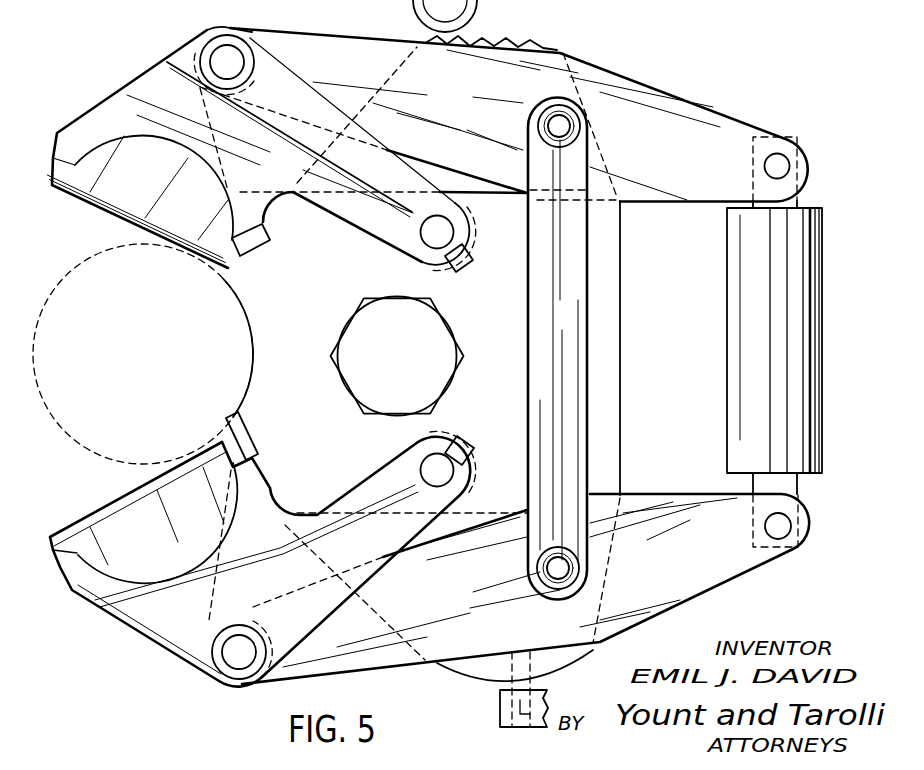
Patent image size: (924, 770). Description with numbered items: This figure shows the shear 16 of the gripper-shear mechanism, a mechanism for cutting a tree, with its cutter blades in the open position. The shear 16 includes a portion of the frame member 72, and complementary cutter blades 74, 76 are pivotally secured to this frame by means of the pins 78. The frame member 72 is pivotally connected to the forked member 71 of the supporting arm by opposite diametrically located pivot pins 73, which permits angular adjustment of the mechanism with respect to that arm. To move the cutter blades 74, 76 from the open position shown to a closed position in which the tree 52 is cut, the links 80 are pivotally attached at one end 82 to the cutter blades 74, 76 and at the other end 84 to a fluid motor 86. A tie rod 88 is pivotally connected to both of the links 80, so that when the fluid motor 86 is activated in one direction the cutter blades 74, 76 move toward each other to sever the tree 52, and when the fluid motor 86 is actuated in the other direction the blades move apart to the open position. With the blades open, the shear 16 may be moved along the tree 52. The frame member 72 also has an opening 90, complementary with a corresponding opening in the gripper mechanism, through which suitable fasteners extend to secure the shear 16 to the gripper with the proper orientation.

The shear 16 is at (748, 81).
The tree 52 is at (68, 273).
The forked member 71 is at (500, 708).
The frame member 72 is at (612, 330).
The pivot pins 73 is at (500, 722).
The cutter blade 74 is at (104, 117).
The cutter blade 76 is at (133, 608).
The pins 78 is at (425, 243).
The links 80 is at (466, 95).
The end of link 82 is at (264, 38).
The end of link 84 is at (758, 124).
The fluid motor 86 is at (808, 335).
The tie rod 88 is at (568, 263).
The opening 90 is at (412, 372).